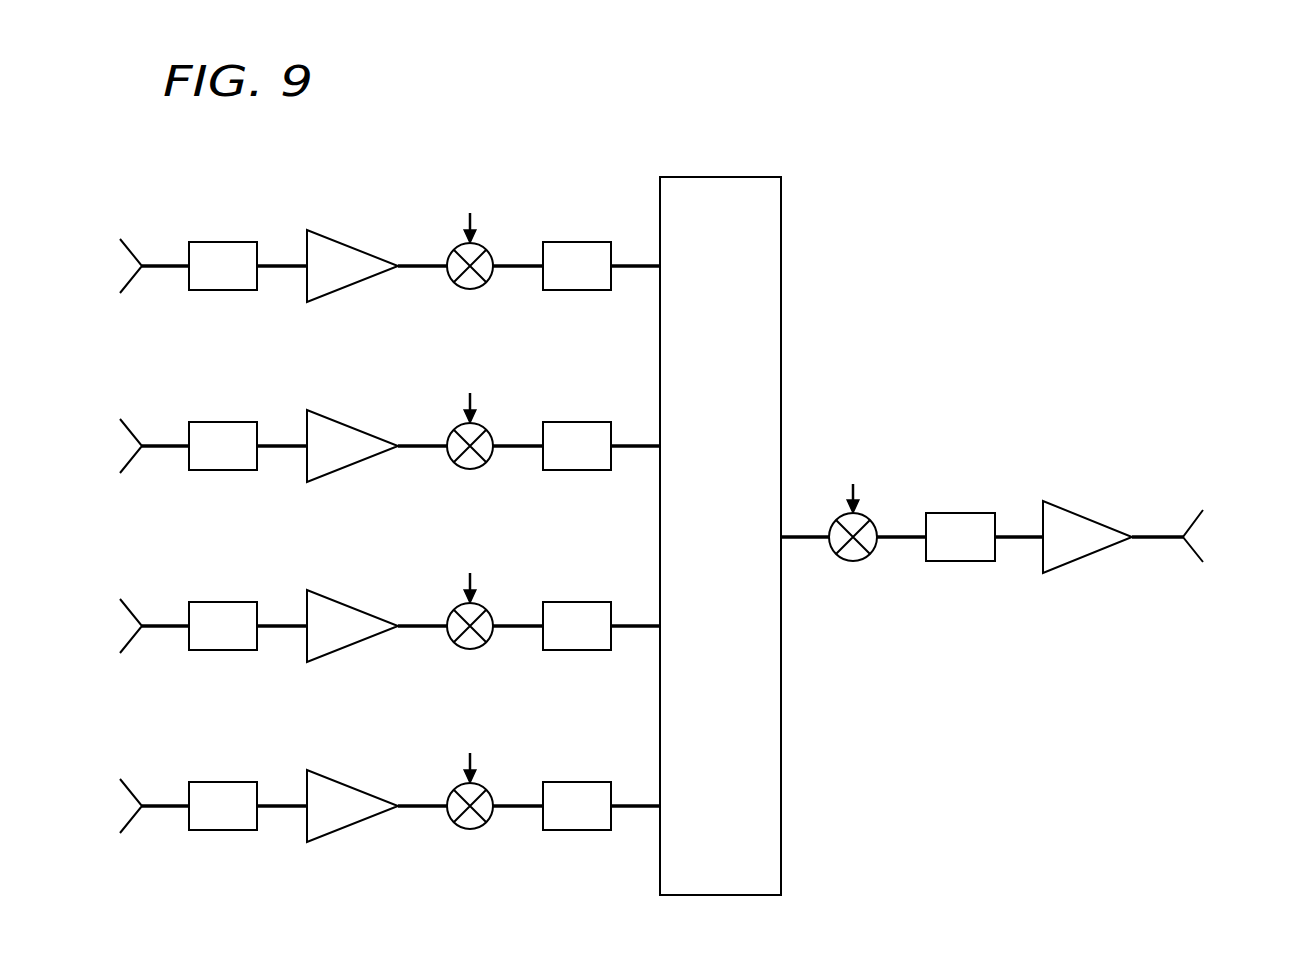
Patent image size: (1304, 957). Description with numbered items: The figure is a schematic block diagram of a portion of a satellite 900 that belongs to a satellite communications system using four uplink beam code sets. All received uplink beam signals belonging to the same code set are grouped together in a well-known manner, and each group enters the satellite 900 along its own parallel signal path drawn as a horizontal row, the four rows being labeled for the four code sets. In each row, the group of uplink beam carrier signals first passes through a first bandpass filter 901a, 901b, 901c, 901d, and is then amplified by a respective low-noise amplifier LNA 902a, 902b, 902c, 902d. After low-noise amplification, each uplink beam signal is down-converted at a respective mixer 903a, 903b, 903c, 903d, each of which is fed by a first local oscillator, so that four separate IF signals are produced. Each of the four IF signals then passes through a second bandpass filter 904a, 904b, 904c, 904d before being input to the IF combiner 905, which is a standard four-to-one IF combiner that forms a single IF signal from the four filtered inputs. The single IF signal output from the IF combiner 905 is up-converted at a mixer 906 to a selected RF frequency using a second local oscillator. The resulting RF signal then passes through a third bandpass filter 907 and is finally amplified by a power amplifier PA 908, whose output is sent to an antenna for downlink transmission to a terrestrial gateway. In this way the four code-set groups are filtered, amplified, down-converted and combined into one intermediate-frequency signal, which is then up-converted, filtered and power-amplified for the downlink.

The satellite 900 is at (707, 90).
The first bandpass filter 901a is at (227, 241).
The first bandpass filter 901b is at (227, 421).
The first bandpass filter 901c is at (227, 601).
The first bandpass filter 901d is at (227, 781).
The low-noise amplifier LNA 902a is at (342, 243).
The low-noise amplifier LNA 902b is at (342, 423).
The low-noise amplifier LNA 902c is at (342, 603).
The low-noise amplifier LNA 902d is at (342, 783).
The mixer 903a is at (470, 289).
The mixer 903b is at (470, 469).
The mixer 903c is at (470, 649).
The mixer 903d is at (470, 829).
The second bandpass filter 904a is at (580, 242).
The second bandpass filter 904b is at (580, 422).
The second bandpass filter 904c is at (580, 602).
The second bandpass filter 904d is at (580, 782).
The IF combiner 905 is at (720, 176).
The mixer 906 is at (853, 561).
The third bandpass filter 907 is at (963, 513).
The power amplifier PA 908 is at (1079, 513).